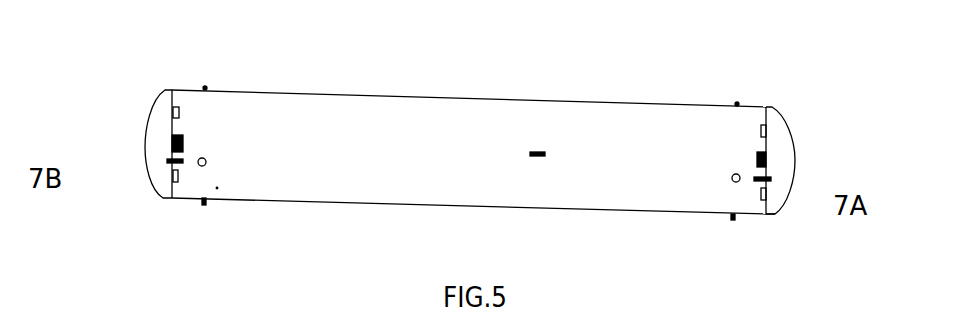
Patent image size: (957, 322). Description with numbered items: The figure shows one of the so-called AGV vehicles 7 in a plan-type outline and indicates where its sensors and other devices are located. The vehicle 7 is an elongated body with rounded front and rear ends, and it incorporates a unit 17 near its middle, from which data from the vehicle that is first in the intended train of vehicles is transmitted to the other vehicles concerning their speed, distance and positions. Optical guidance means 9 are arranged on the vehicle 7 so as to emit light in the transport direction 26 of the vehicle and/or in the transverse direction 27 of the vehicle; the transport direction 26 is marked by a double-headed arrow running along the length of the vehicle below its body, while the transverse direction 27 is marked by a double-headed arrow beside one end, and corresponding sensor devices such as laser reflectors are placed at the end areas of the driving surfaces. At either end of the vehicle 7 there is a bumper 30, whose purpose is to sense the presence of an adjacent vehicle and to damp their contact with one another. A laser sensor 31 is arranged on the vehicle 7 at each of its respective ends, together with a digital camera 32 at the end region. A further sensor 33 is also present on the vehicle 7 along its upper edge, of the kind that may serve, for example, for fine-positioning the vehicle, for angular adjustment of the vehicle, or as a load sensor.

The vehicle 7 is at (797, 108).
The optical guidance means 9 is at (170, 162).
The unit 17 is at (537, 152).
The transport direction 26 is at (508, 228).
The transverse direction 27 is at (818, 130).
The bumper 30 is at (777, 200).
The laser sensor 31 is at (172, 143).
The digital camera 32 is at (737, 103).
The sensor 33 is at (205, 87).